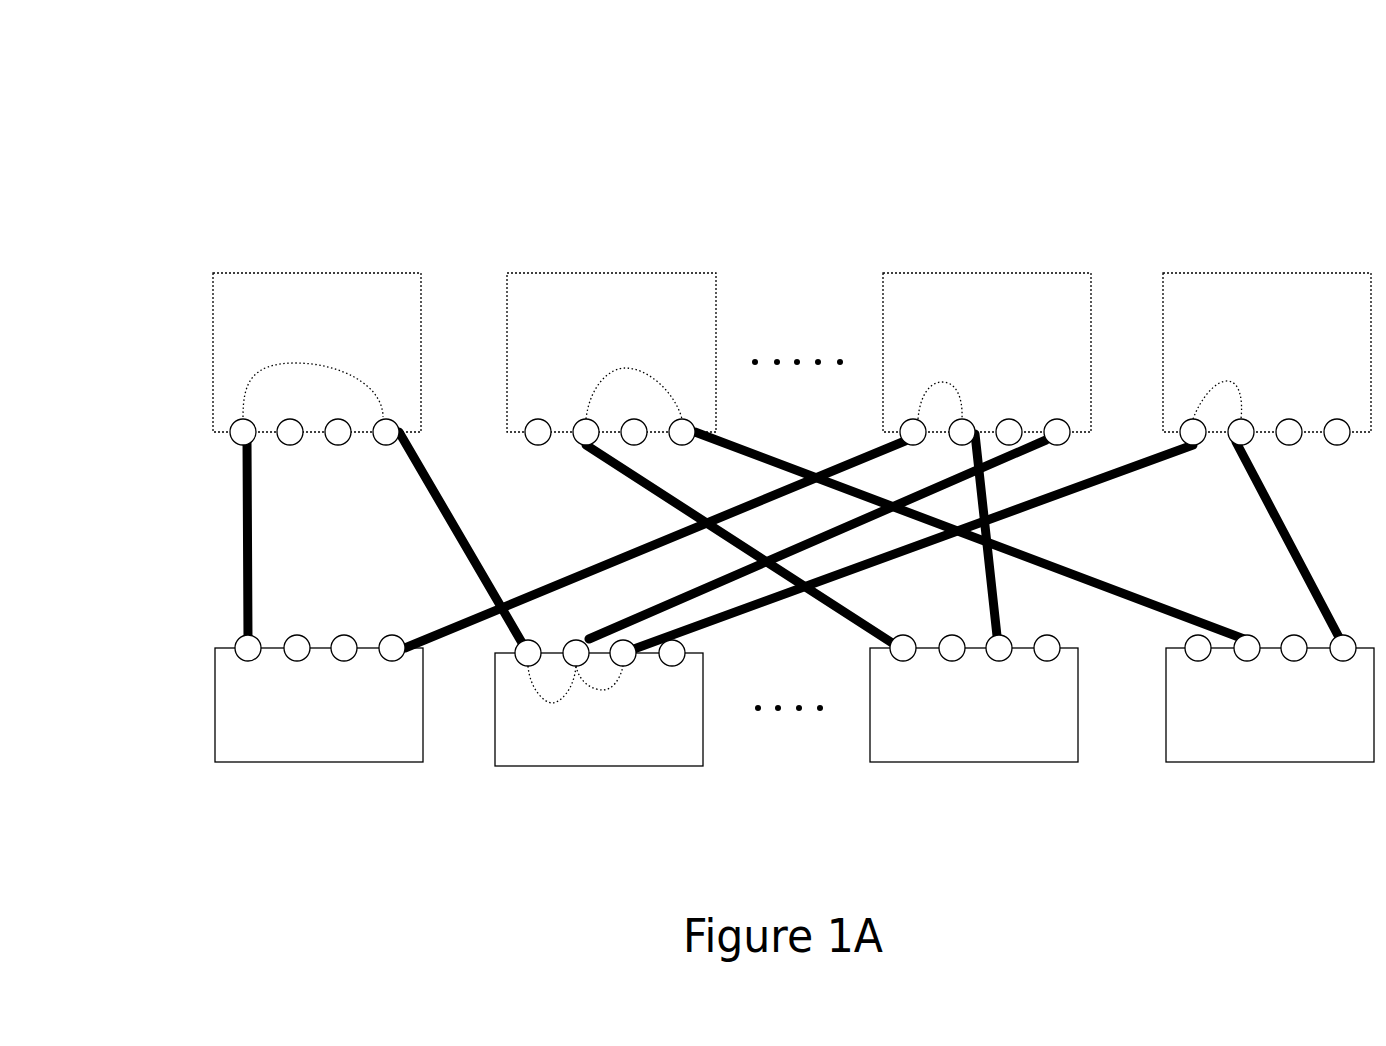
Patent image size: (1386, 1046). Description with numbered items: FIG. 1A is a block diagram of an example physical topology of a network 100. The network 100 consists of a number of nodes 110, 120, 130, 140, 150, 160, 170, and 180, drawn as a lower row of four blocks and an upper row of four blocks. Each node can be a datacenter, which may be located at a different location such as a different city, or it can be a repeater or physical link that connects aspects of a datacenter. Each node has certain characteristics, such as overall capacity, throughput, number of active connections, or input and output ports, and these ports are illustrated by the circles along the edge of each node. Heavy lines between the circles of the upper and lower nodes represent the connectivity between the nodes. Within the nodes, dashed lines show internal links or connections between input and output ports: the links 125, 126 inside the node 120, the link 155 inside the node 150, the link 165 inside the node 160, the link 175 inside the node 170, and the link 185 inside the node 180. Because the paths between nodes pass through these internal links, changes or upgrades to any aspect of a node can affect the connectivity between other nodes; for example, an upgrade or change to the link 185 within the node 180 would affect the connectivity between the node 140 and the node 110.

The network 100 is at (245, 98).
The node 110 is at (230, 805).
The node 120 is at (550, 833).
The link 125 is at (552, 703).
The link 126 is at (611, 698).
The node 130 is at (967, 812).
The node 140 is at (1287, 810).
The node 150 is at (192, 272).
The link 155 is at (297, 358).
The node 160 is at (567, 258).
The link 165 is at (615, 368).
The node 170 is at (935, 240).
The link 175 is at (937, 378).
The node 180 is at (1222, 240).
The link 185 is at (1223, 376).